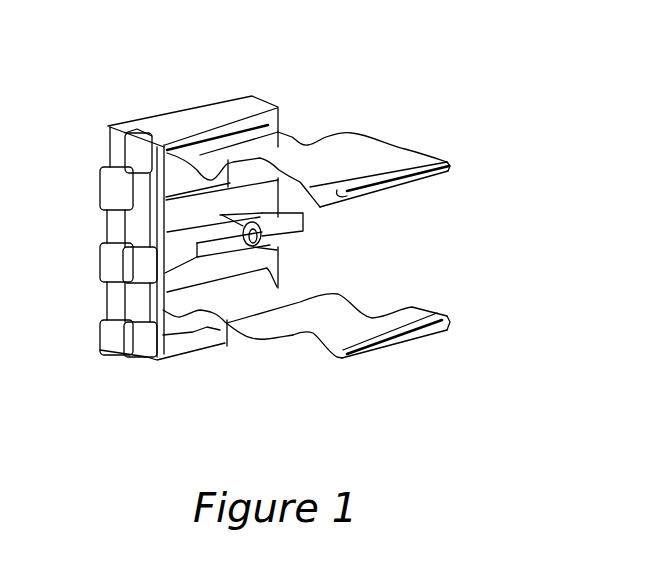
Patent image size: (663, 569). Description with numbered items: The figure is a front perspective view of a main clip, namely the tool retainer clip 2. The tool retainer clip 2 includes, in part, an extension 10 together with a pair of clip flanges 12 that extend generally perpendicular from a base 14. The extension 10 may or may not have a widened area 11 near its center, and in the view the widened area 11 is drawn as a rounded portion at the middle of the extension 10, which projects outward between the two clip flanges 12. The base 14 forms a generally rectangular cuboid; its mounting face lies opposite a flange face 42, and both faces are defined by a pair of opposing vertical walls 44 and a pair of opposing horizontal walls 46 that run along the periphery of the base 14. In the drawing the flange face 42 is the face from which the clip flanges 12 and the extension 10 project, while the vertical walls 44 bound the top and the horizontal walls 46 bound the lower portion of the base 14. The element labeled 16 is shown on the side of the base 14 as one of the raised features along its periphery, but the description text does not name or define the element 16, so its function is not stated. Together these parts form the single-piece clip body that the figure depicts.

The tool retainer clip 2 is at (352, 78).
The extension 10 is at (280, 230).
The widened area 11 is at (270, 245).
The clip flanges 12 is at (375, 147).
The base 14 is at (282, 67).
The locking lug 16 is at (135, 153).
The flange face 42 is at (165, 145).
The vertical walls 44 is at (197, 113).
The horizontal walls 46 is at (143, 342).